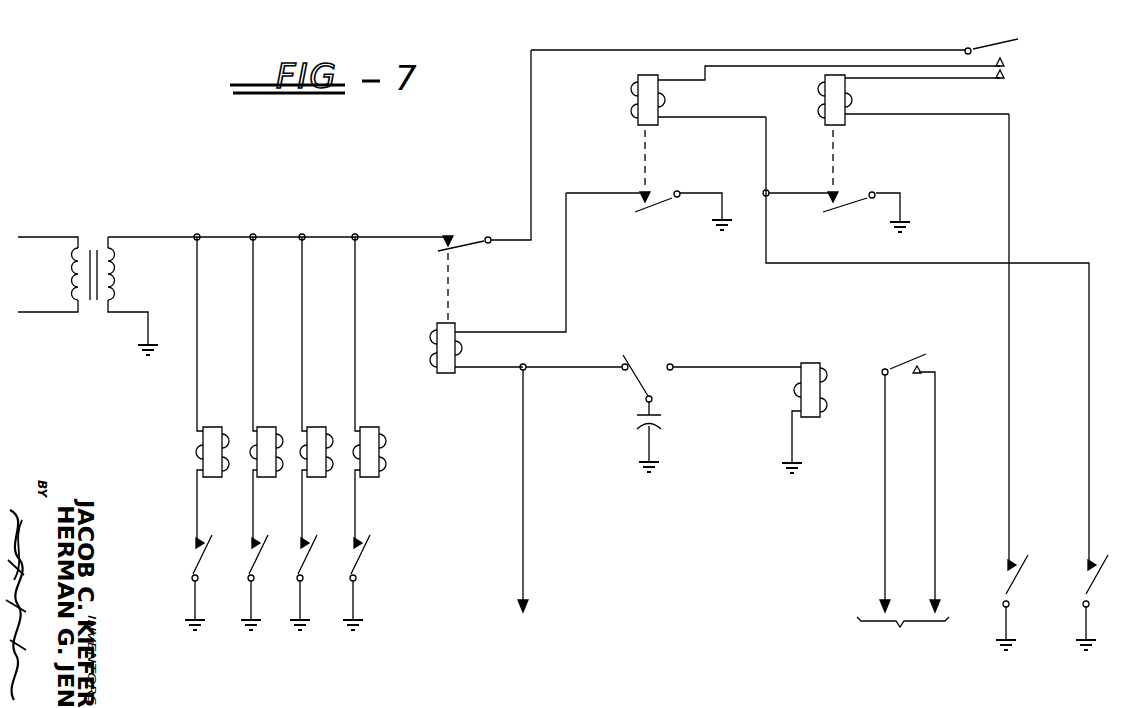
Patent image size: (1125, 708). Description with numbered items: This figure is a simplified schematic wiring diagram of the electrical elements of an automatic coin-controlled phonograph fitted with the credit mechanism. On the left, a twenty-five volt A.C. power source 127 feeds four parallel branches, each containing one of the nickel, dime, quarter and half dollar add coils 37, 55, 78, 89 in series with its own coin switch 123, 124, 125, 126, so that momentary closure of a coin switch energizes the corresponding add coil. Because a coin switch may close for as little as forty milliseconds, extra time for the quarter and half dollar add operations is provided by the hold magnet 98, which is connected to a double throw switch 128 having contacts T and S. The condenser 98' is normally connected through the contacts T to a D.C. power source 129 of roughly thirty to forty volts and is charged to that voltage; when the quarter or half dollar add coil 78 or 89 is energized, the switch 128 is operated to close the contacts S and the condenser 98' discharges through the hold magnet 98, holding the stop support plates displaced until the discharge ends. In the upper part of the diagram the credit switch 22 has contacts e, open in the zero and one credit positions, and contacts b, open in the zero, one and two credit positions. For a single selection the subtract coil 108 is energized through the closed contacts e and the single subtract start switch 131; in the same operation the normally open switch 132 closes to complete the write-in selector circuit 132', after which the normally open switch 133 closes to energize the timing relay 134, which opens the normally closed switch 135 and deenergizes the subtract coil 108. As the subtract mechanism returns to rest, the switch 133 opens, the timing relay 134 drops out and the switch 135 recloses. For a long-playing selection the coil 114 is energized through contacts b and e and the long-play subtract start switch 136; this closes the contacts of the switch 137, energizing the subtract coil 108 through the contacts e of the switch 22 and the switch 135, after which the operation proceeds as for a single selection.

The switch 22 is at (991, 44).
The nickel add coil 37 is at (208, 427).
The dime add coil 55 is at (262, 427).
The quarter add coil 78 is at (312, 427).
The half dollar add coil 89 is at (368, 427).
The hold magnet 98 is at (821, 418).
The condenser 98' is at (619, 437).
The subtract coil 108 is at (641, 77).
The coil 114 is at (826, 77).
The coin switch 123 is at (194, 560).
The coin switch 124 is at (250, 561).
The coin switch 125 is at (299, 561).
The coin switch 126 is at (352, 561).
The A.C. power source 127 is at (96, 251).
The double throw switch 128 is at (638, 376).
The D.C. power source 129 is at (514, 502).
The single subtract start switch 131 is at (1093, 582).
The normally open switch 132 is at (910, 483).
The write-in selector circuit 132' is at (902, 636).
The normally open switch 133 is at (656, 203).
The timing relay 134 is at (449, 324).
The normally closed switch 135 is at (460, 246).
The long-play subtract start switch 136 is at (1012, 582).
The switch 137 is at (846, 204).